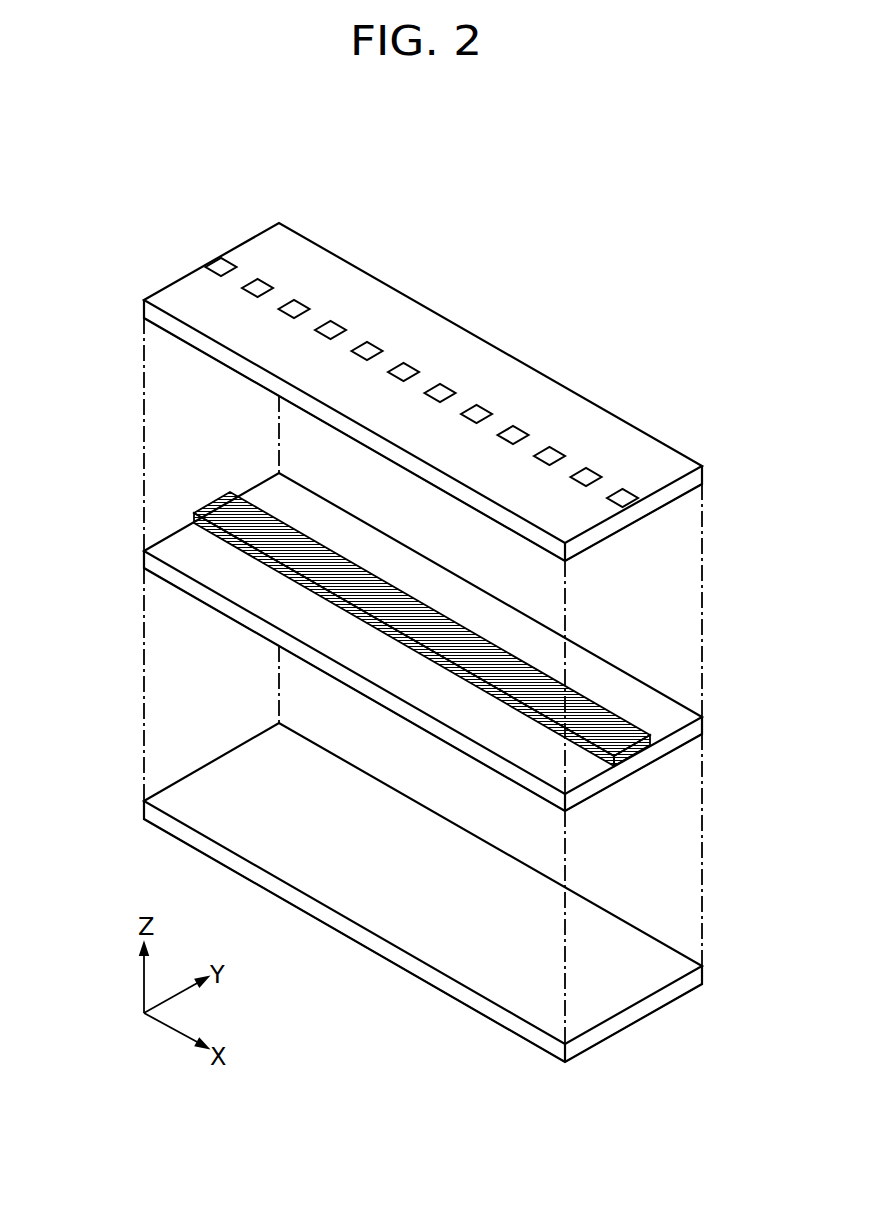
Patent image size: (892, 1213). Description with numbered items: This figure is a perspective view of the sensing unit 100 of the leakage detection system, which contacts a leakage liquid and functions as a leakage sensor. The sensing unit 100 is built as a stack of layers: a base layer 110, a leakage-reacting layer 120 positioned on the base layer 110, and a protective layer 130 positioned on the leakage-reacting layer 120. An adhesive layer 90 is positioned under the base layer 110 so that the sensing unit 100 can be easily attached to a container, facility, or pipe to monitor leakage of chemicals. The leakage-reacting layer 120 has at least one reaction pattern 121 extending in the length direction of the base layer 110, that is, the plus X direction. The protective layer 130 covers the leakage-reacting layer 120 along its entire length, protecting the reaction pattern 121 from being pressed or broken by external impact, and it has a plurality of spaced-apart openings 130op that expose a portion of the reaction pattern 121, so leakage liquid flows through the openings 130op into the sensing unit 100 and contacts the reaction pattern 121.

The sensing unit 100 is at (644, 261).
The protective layer 130 is at (438, 392).
The openings 130op is at (630, 497).
The base layer 110 is at (423, 653).
The leakage-reacting layer 120 is at (443, 663).
The reaction pattern 121 is at (633, 748).
The adhesive layer 90 is at (605, 927).